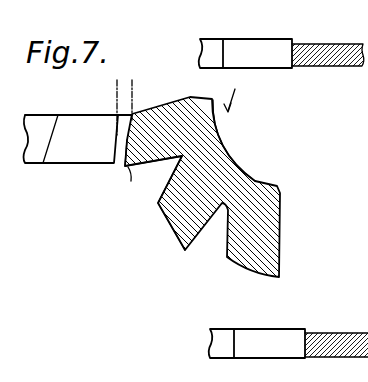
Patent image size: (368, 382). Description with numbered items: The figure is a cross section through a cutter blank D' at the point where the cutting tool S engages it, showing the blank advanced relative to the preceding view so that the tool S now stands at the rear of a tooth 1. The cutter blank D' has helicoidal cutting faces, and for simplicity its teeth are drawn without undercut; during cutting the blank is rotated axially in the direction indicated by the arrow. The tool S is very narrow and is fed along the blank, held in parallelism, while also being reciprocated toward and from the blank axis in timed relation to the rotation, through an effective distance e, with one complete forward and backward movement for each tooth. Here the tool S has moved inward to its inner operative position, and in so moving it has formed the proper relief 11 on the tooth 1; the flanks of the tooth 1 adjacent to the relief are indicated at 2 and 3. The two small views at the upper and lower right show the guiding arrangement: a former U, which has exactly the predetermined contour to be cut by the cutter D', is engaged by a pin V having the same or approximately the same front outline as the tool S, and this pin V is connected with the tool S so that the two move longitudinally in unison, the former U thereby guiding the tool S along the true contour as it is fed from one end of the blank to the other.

The tooth 1 is at (152, 118).
The tooth flank 2 is at (160, 182).
The tooth flank 3 is at (150, 172).
The relief 11 is at (124, 166).
The tool S is at (72, 118).
The effective distance e is at (137, 92).
The cutter blank D is at (223, 158).
The pin V is at (245, 48).
The former U is at (331, 45).